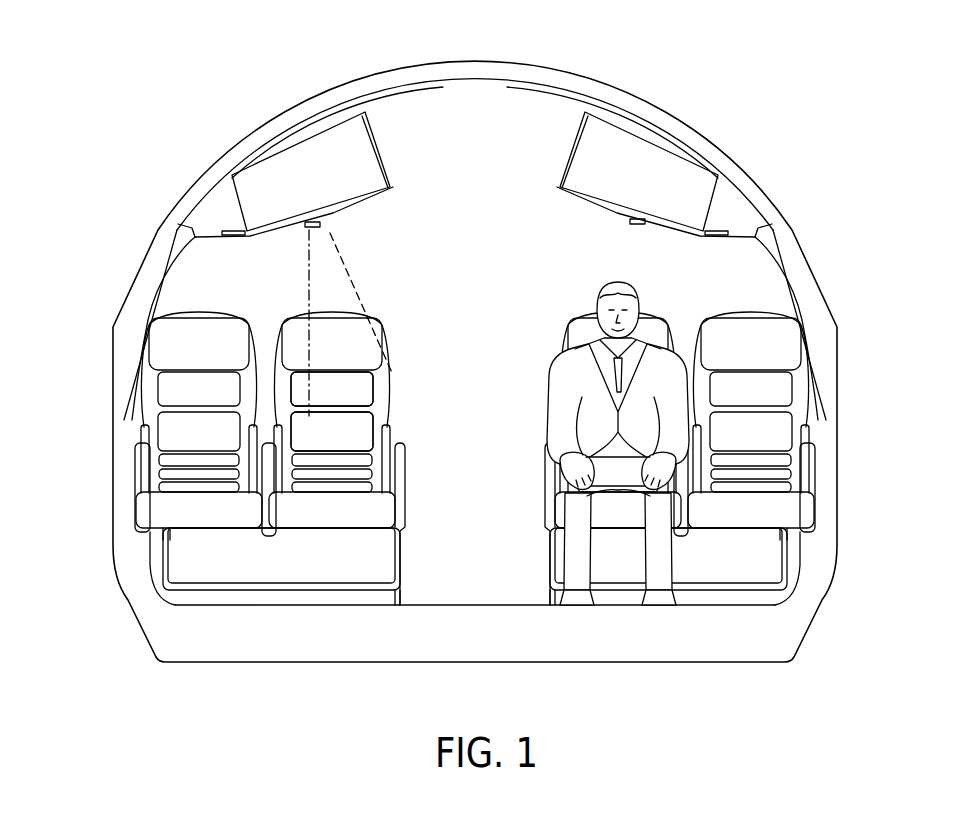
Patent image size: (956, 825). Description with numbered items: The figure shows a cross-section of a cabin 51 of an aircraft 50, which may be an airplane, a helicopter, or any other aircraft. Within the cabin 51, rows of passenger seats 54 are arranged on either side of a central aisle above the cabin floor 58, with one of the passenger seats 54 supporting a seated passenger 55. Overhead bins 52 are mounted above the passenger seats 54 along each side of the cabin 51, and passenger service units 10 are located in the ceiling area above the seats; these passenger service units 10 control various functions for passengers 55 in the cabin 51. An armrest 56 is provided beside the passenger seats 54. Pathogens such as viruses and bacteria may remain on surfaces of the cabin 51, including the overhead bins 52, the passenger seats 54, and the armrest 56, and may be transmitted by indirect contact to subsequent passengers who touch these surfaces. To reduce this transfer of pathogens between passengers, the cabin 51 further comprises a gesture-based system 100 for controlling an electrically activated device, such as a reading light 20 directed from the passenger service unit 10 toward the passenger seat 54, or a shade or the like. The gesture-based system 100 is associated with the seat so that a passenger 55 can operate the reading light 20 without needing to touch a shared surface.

The aircraft 50 is at (128, 72).
The passenger service unit 10 is at (313, 221).
The reading light 20 is at (330, 232).
The overhead bin 52 is at (265, 192).
The passenger 55 is at (700, 290).
The gesture-based system 100 is at (400, 390).
The passenger seat 54 is at (360, 395).
The cabin 51 is at (497, 508).
The armrest 56 is at (410, 457).
The cabin floor 58 is at (484, 598).